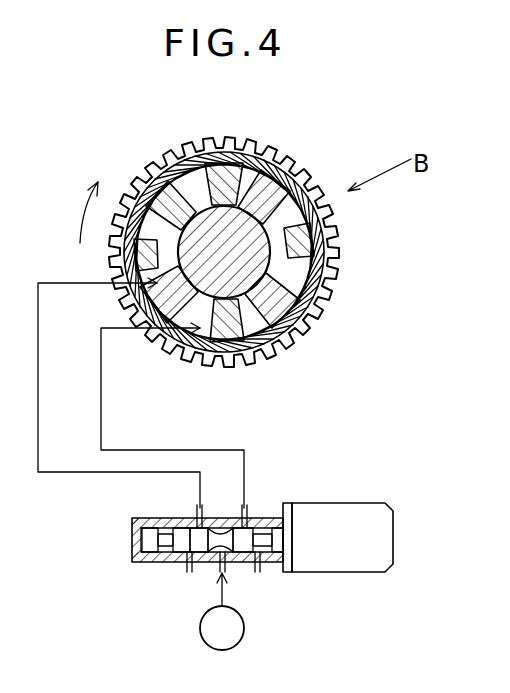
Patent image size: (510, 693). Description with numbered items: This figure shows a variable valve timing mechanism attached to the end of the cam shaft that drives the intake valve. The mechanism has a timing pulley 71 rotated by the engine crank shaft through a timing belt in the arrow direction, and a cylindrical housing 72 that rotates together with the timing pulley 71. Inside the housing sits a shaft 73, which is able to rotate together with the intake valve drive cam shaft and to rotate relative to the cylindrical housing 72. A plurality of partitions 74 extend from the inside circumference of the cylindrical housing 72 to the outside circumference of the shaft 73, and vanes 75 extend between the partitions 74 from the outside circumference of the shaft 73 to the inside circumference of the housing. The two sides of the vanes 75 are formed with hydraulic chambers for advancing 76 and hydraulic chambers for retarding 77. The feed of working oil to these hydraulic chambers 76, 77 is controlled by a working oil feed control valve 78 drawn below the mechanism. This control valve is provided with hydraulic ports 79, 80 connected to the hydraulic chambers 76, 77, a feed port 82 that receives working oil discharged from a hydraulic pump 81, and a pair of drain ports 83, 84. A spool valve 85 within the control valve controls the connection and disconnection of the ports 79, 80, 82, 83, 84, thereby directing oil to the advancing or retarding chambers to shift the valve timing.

The timing pulley 71 is at (306, 276).
The cylindrical housing 72 is at (325, 350).
The shaft 73 is at (242, 218).
The partitions 74 is at (177, 192).
The vanes 75 is at (160, 172).
The hydraulic chambers for advancing 76 is at (291, 277).
The hydraulic chambers for retarding 77 is at (112, 277).
The working oil feed control valve 78 is at (372, 486).
The hydraulic port 79 is at (247, 513).
The hydraulic port 80 is at (197, 518).
The hydraulic pump 81 is at (245, 631).
The feed port 82 is at (218, 573).
The drain port 83 is at (262, 572).
The drain port 84 is at (188, 568).
The spool valve 85 is at (165, 543).